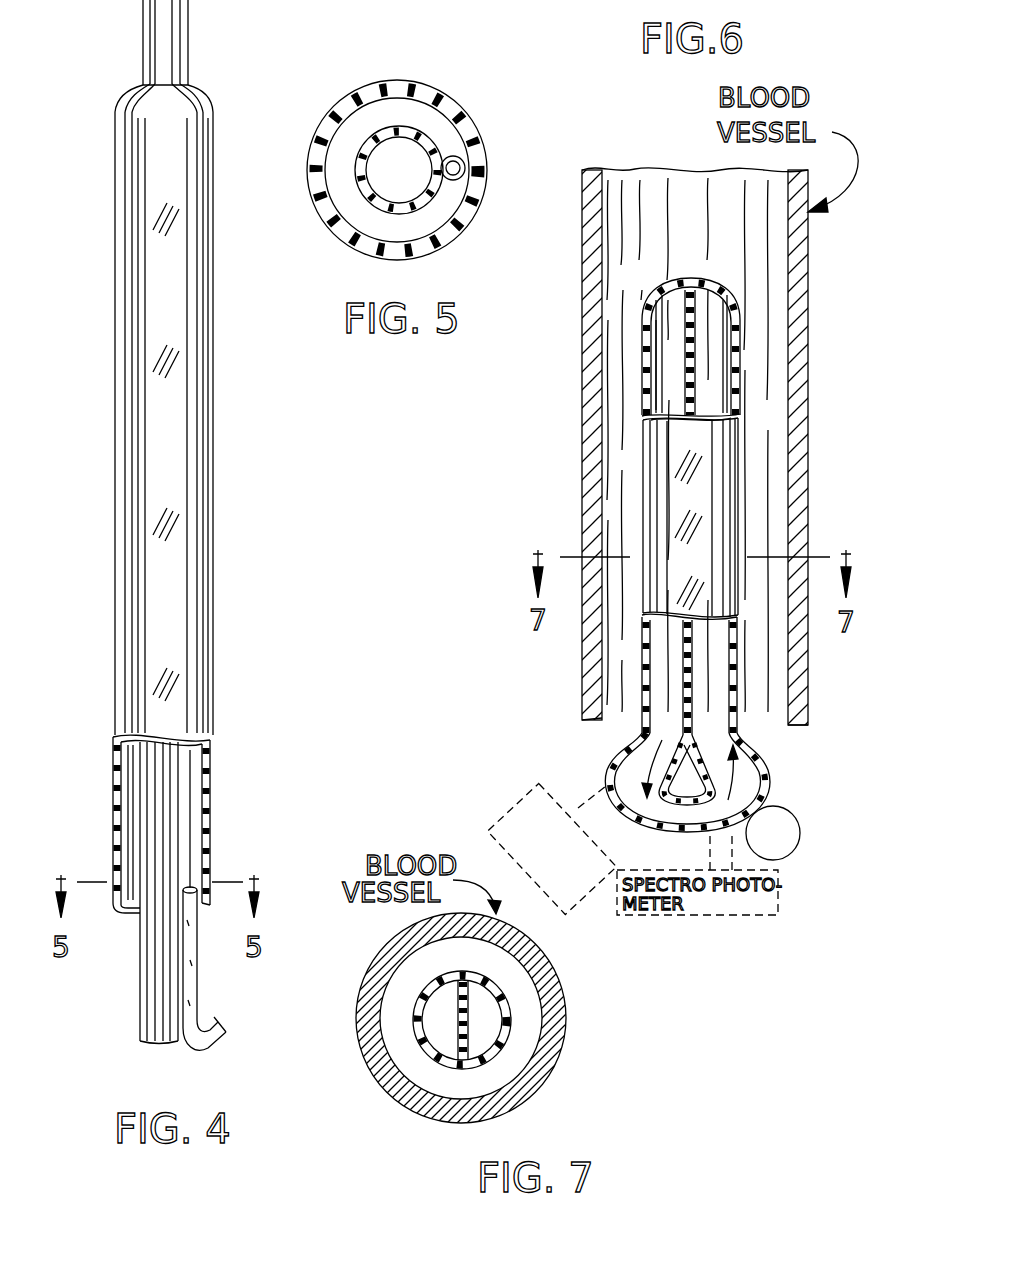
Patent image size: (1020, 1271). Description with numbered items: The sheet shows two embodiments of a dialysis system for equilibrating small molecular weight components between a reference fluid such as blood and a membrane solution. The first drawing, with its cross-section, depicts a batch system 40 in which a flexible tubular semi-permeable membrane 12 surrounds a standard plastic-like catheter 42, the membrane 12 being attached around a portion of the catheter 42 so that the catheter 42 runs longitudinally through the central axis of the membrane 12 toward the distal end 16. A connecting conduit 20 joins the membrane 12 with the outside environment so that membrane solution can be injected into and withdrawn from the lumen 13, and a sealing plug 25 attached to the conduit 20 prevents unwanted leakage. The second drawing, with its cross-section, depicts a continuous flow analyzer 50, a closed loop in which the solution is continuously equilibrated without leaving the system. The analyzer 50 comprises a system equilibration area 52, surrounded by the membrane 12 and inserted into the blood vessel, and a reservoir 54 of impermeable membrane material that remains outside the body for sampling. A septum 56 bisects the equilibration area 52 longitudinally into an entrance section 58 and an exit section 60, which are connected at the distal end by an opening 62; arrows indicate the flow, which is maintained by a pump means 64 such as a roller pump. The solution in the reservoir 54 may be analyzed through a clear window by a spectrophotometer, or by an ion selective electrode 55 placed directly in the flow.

In FIG. 4, the tubular semi-permeable membrane 12 is at (115, 320).
In FIG. 5, the tubular semi-permeable membrane 12 is at (386, 81).
In FIG. 6, the tubular semi-permeable membrane 12 is at (643, 385).
In FIG. 7, the tubular semi-permeable membrane 12 is at (503, 988).
In FIG. 4, the lumen 13 is at (132, 814).
In FIG. 4, the distal end 16 is at (135, 88).
In FIG. 4, the connecting tube or conduit 20 is at (195, 982).
In FIG. 5, the connecting tube or conduit 20 is at (466, 169).
In FIG. 4, the sealing plug 25 is at (221, 1021).
In FIG. 4, the system 40 is at (220, 346).
In FIG. 4, the standard catheter 42 is at (136, 957).
In FIG. 5, the standard catheter 42 is at (427, 136).
In FIG. 6, the continuous flow analyzer 50 is at (738, 433).
In FIG. 6, the system equilibration area 52 is at (708, 388).
In FIG. 6, the reservoir 54 is at (752, 777).
In FIG. 6, the ion selective electrode 55 is at (523, 798).
In FIG. 6, the septum 56 is at (684, 670).
In FIG. 7, the septum 56 is at (466, 1018).
In FIG. 6, the entrance section 58 is at (713, 707).
In FIG. 6, the exit section 60 is at (658, 710).
In FIG. 6, the opening 62 is at (690, 320).
In FIG. 6, the pump means 64 is at (775, 838).